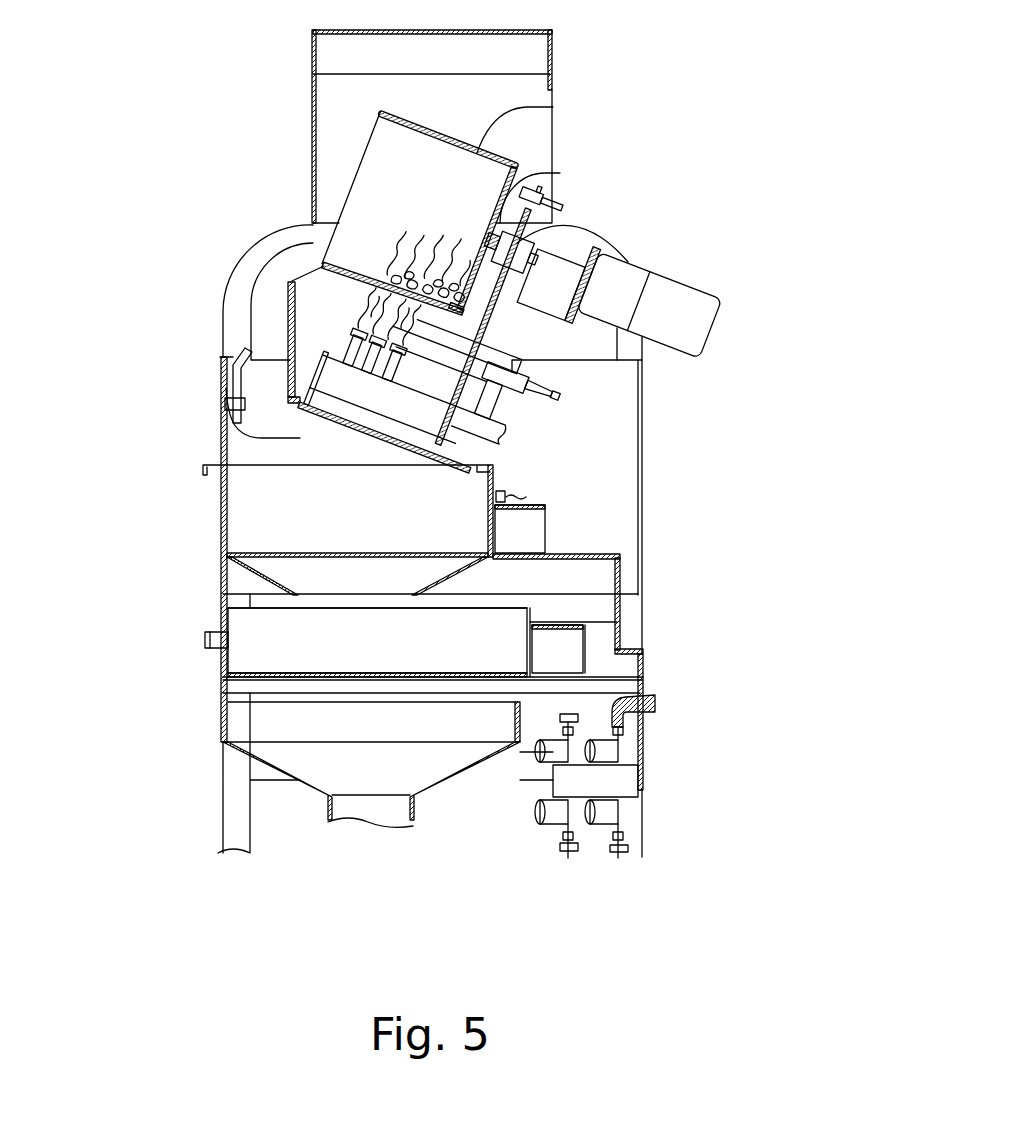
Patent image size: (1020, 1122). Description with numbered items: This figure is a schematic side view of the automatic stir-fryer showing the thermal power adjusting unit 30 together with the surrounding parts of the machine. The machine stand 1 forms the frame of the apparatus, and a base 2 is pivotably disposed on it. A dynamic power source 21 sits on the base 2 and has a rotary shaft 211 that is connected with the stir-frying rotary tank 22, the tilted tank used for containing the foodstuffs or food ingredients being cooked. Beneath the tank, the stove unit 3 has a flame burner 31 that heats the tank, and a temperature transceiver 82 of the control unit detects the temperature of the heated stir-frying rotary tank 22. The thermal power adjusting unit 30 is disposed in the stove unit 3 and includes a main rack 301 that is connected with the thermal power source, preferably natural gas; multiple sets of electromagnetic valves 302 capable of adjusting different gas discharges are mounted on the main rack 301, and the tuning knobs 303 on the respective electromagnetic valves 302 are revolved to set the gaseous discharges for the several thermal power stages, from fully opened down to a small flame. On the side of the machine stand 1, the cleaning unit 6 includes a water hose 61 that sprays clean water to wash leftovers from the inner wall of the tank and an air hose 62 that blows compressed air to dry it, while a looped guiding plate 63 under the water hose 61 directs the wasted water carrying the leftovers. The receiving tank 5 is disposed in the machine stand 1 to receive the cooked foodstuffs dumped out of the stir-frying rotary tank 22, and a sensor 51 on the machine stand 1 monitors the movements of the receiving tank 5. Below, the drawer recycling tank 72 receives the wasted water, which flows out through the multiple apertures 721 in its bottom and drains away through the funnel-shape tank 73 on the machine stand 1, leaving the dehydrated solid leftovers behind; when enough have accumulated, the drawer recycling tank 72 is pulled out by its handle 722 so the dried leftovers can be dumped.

The machine stand 1 is at (645, 395).
The base 2 is at (352, 426).
The stove unit 3 is at (343, 347).
The receiving tank 5 is at (223, 505).
The cleaning unit 6 is at (172, 337).
The dynamic power source 21 is at (695, 300).
The stir-frying rotary tank 22 is at (553, 107).
The rotary shaft 211 is at (535, 224).
The temperature transceiver 82 is at (553, 171).
The water hose 61 is at (222, 367).
The air hose 62 is at (228, 388).
The flame burner 31 is at (220, 424).
The sensor 51 is at (505, 493).
The looped guiding plate 63 is at (233, 573).
The drawer recycling tank 72 is at (223, 666).
The apertures 721 is at (333, 673).
The handle 722 is at (205, 637).
The funnel-shape tank 73 is at (252, 768).
The thermal power adjusting unit 30 is at (652, 748).
The main rack 301 is at (623, 782).
The electromagnetic valves 302 is at (543, 728).
The tuning knobs 303 is at (573, 850).